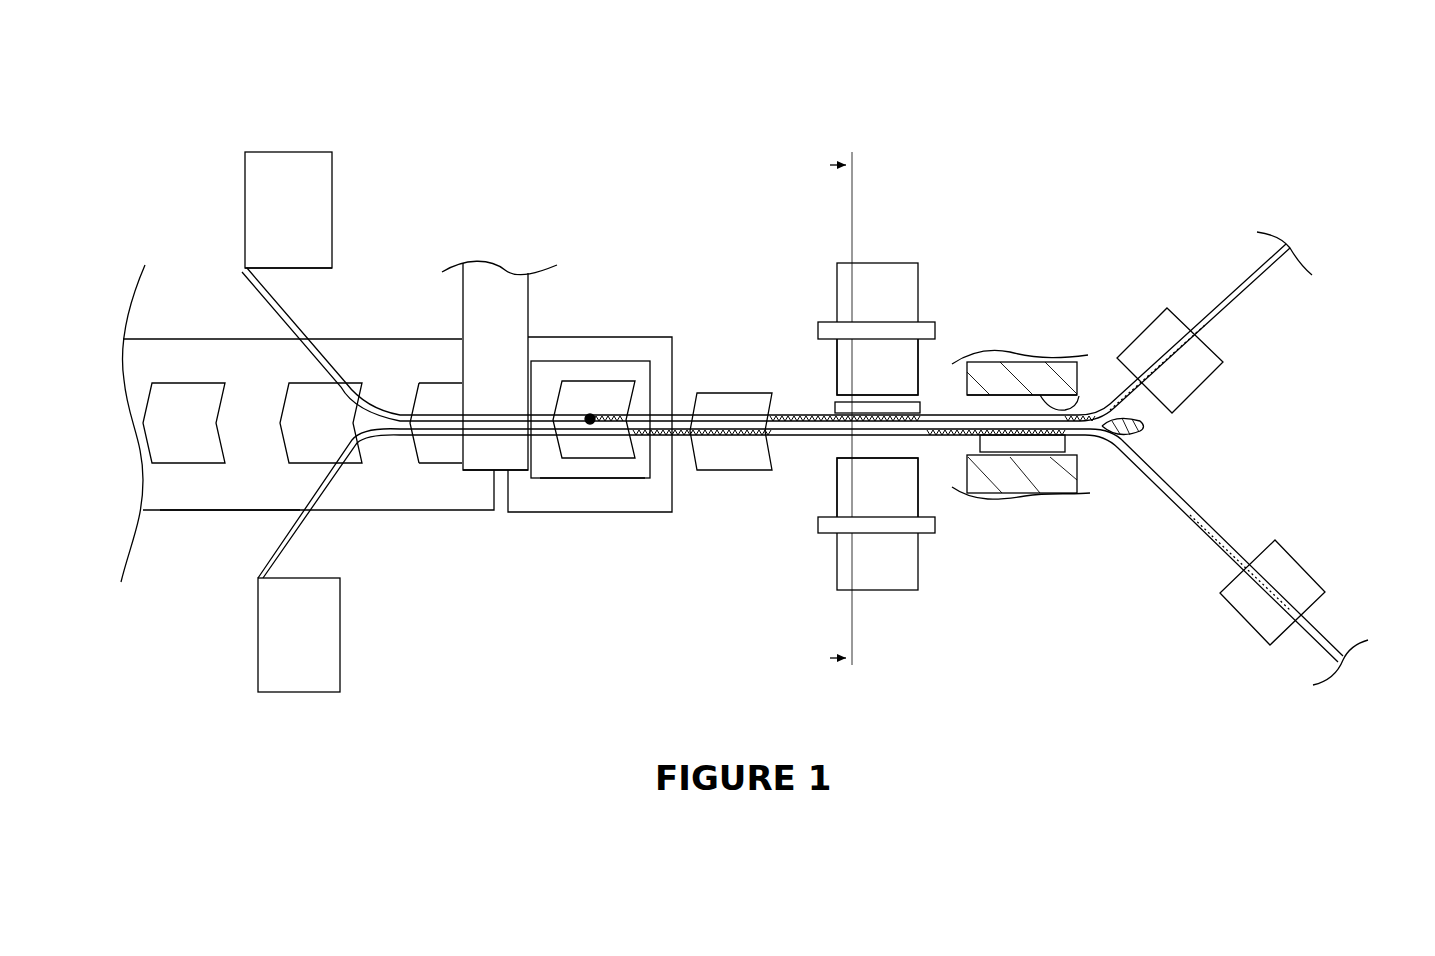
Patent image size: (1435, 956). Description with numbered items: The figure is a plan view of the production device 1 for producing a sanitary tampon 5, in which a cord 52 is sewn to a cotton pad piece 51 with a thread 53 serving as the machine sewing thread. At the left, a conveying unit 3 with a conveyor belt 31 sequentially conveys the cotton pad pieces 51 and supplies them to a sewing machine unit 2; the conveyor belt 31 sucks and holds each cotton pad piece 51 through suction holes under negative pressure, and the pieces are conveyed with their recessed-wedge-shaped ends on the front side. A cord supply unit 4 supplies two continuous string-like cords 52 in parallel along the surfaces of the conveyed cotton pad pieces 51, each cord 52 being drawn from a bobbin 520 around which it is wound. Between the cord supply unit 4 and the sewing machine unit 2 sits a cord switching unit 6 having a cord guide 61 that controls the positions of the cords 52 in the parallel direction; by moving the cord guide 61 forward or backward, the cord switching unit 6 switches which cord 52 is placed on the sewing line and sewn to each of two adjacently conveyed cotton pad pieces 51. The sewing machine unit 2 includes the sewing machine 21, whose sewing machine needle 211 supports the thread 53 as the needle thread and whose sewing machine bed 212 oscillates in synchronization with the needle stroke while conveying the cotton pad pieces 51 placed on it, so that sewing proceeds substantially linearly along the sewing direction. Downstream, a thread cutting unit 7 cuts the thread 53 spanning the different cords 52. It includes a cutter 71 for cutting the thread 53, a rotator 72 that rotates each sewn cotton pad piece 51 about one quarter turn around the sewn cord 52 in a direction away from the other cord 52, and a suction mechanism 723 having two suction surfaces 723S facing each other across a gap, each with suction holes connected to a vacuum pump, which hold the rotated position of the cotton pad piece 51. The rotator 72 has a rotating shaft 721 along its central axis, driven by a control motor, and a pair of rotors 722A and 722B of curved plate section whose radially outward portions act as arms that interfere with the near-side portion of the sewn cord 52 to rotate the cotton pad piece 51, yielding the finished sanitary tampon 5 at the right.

The production device 1 is at (978, 190).
The sewing machine unit 2 is at (607, 328).
The conveying unit 3 is at (373, 522).
The cord supply unit 4 is at (323, 137).
The sanitary tampon 5 is at (1253, 540).
The cord switching unit 6 is at (488, 250).
The thread cutting unit 7 is at (1048, 588).
The sewing machine 21 is at (552, 525).
The conveyor belt 31 is at (207, 493).
The cotton pad piece 51 is at (1263, 335).
The cord 52 is at (1237, 203).
The thread 53 is at (800, 417).
The cord guide 61 is at (488, 447).
The cutter 71 is at (1145, 433).
The rotator 72 is at (862, 250).
The sewing machine needle 211 is at (590, 425).
The sewing machine bed 212 is at (625, 468).
The bobbin 520 is at (315, 178).
The rotating shaft 721 is at (907, 328).
The rotor 722A is at (905, 490).
The rotor 722B is at (907, 383).
The suction mechanism 723 is at (1055, 347).
The suction surface 723S is at (1077, 398).